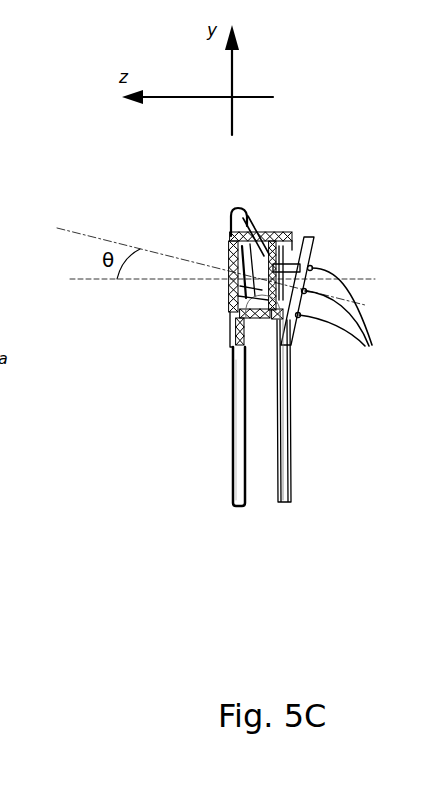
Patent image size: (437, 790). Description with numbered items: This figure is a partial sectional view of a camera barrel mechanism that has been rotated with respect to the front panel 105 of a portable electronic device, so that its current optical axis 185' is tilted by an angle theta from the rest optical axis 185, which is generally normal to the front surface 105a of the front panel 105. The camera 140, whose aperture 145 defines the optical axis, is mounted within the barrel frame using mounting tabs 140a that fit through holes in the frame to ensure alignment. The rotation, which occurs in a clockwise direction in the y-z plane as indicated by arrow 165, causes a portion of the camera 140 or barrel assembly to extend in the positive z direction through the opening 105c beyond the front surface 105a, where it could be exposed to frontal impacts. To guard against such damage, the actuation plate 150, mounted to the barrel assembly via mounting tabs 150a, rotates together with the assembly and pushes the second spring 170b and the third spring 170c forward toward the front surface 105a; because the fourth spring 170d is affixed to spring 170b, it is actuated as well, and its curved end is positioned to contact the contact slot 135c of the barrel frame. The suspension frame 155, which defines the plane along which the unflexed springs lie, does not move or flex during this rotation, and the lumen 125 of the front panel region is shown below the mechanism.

The front panel 105 is at (215, 426).
The front surface 105a is at (232, 348).
The opening 105c is at (227, 326).
The shaft lumen 125 is at (232, 452).
The contact slot 135c is at (238, 294).
The camera 140 is at (236, 246).
The mounting tabs 140a is at (238, 213).
The aperture 145 is at (232, 266).
The actuation plate 150 is at (316, 241).
The mounting tabs 150a is at (350, 320).
The suspension frame 155 is at (312, 240).
The direction of actuation 165 is at (264, 222).
The second spring 170b is at (281, 480).
The third spring 170c is at (286, 233).
The fourth spring 170d is at (289, 420).
The optical axis 185 is at (200, 300).
The current optical axis 185' is at (211, 254).